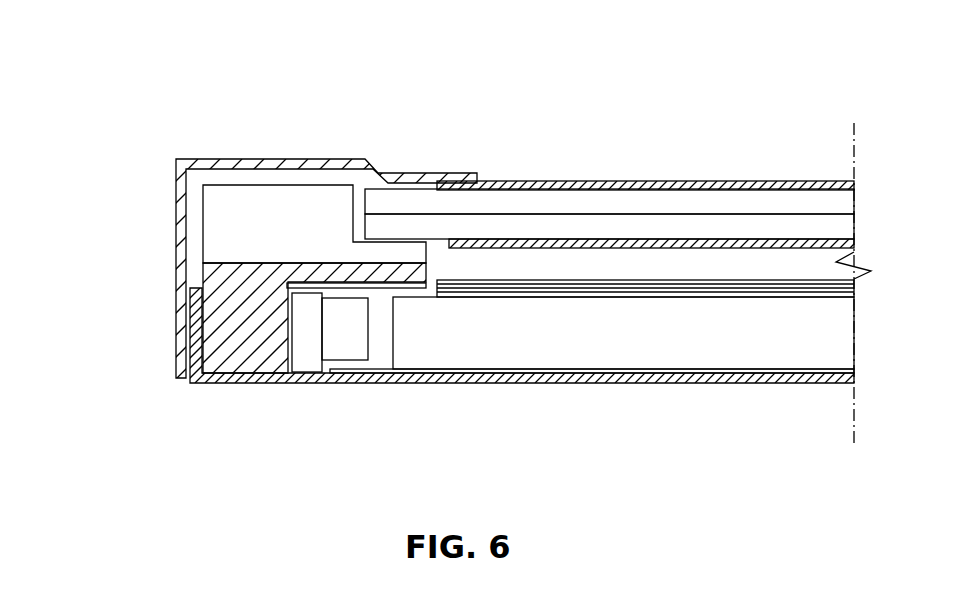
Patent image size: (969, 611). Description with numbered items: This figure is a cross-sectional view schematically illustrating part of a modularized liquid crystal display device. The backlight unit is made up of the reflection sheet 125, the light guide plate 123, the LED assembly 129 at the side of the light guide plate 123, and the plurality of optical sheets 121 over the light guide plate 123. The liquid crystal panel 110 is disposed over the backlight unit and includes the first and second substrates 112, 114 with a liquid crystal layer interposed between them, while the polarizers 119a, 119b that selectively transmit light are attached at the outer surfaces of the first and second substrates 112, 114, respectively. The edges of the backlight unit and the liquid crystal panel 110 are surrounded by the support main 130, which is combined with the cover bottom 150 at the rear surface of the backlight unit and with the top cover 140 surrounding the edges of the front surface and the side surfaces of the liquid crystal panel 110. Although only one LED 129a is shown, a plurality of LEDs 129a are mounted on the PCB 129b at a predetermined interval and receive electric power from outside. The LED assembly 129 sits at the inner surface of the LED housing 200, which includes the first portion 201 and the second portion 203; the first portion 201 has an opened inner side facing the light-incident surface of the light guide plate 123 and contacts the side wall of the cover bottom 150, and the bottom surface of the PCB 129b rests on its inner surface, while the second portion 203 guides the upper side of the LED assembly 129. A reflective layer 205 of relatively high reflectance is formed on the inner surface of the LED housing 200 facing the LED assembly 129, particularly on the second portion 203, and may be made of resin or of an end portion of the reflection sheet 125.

The top cover 140 is at (270, 163).
The support main 130 is at (227, 231).
The liquid crystal panel 110 is at (609, 149).
The second substrate 114 is at (487, 205).
The first substrate 112 is at (540, 228).
The polarizer 119b is at (649, 181).
The polarizer 119a is at (738, 238).
The LED housing 200 is at (308, 377).
The first portion 201 is at (223, 350).
The second portion 203 is at (333, 270).
The reflective layer 205 is at (262, 282).
The LED assembly 129 is at (357, 402).
The PCB 129b is at (315, 357).
The LED 129a is at (350, 343).
The optical sheets 121 is at (698, 297).
The light guide plate 123 is at (500, 347).
The reflection sheet 125 is at (605, 373).
The cover bottom 150 is at (772, 384).